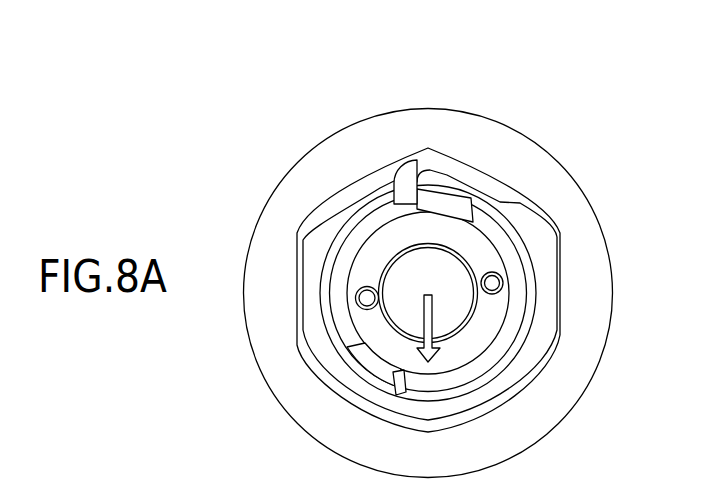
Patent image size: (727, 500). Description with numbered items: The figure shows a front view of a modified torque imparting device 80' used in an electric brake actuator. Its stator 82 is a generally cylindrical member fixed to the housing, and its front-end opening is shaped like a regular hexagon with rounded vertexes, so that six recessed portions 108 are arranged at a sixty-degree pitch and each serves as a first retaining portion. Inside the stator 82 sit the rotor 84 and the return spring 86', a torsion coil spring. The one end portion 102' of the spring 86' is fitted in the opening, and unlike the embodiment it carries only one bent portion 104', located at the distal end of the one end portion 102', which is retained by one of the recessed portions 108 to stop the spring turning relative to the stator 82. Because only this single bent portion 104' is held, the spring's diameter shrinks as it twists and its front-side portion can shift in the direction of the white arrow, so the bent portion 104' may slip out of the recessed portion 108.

The torque imparting device 80' is at (453, 249).
The stator 82 is at (578, 215).
The rotor 84 is at (472, 345).
The return spring 86' is at (479, 290).
The one end portion 102' is at (457, 250).
The bent portion 104' is at (445, 131).
The recessed portion 108 is at (396, 170).